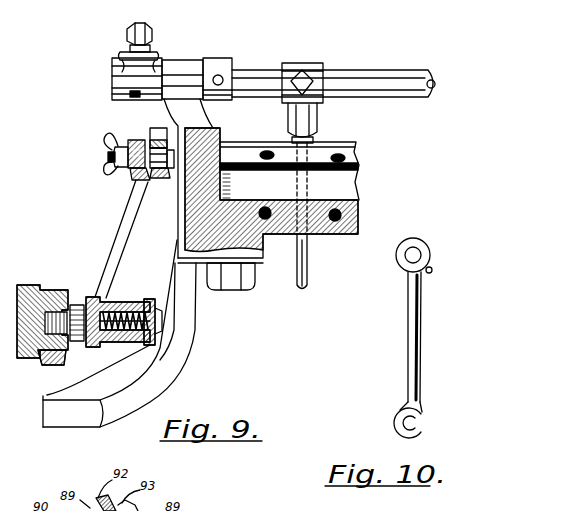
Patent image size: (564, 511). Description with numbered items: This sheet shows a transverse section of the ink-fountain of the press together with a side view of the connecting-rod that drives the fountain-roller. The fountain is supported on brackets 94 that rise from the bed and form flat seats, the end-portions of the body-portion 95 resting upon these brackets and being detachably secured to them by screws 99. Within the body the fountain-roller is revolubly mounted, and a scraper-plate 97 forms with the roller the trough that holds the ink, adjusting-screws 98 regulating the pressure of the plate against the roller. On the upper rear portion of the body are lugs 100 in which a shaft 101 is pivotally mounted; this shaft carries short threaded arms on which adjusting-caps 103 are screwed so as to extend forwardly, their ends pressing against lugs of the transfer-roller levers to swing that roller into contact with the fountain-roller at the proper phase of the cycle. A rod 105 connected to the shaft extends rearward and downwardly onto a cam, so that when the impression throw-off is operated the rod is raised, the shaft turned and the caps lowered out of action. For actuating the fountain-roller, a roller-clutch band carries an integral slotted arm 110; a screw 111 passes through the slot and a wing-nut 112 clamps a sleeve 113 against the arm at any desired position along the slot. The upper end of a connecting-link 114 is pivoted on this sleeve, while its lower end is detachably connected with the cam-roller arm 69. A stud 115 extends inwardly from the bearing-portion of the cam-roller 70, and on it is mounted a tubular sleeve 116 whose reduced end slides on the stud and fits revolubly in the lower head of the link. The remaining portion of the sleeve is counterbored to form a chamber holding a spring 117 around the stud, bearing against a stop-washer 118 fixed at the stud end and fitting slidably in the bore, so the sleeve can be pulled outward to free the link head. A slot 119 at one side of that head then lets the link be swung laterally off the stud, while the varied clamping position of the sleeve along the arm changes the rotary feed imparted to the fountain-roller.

In FIG. 9, the cam-roller arm 69 is at (44, 364).
In FIG. 9, the cam-roller 70 is at (17, 352).
In FIG. 9, the brackets 94 is at (178, 381).
In FIG. 9, the body-portion 95 is at (185, 217).
In FIG. 9, the scraper-plate 97 is at (327, 148).
In FIG. 9, the adjusting-screws 98 is at (264, 206).
In FIG. 9, the screws 99 is at (228, 284).
In FIG. 9, the lugs 100 is at (185, 64).
In FIG. 9, the shaft 101 is at (253, 72).
In FIG. 9, the adjusting-caps 103 is at (138, 31).
In FIG. 9, the rod 105 is at (309, 252).
In FIG. 9, the slotted arm 110 is at (143, 181).
In FIG. 9, the screw 111 is at (158, 170).
In FIG. 9, the wing-nut 112 is at (113, 176).
In FIG. 9, the sleeve 113 is at (150, 141).
In FIG. 9, the connecting-link 114 is at (108, 252).
In FIG. 10, the connecting-link 114 is at (408, 348).
In FIG. 9, the stud 115 is at (77, 343).
In FIG. 9, the tubular sleeve 116 is at (96, 307).
In FIG. 9, the spring 117 is at (127, 303).
In FIG. 9, the stop-washer 118 is at (152, 346).
In FIG. 10, the slot 119 is at (422, 425).